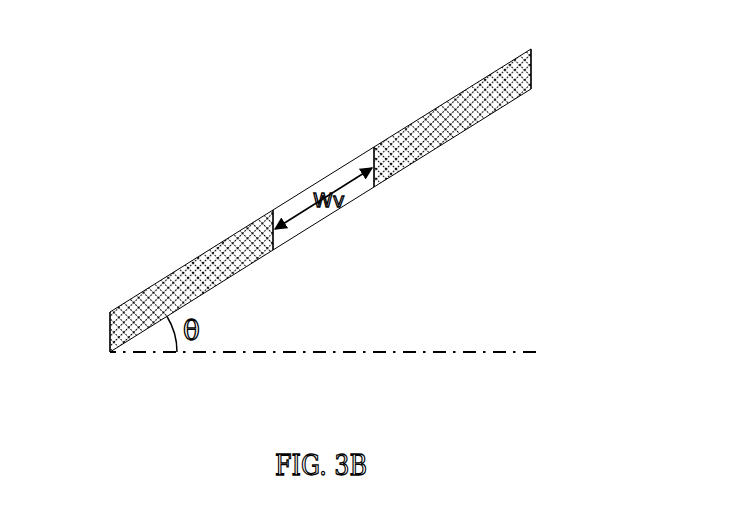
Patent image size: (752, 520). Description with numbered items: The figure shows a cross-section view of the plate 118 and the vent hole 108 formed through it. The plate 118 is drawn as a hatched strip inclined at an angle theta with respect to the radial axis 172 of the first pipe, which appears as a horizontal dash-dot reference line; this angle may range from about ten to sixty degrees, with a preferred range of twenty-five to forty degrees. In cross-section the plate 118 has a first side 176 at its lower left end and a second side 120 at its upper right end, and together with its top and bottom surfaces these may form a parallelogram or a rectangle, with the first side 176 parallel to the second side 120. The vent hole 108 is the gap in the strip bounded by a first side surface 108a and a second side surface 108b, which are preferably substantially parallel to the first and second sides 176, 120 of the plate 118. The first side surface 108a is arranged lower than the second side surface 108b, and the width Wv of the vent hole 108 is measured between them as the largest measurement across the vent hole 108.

The vent hole 108 is at (345, 172).
The first side surface 108a is at (275, 246).
The second side surface 108b is at (372, 183).
The plate 118 is at (462, 104).
The second side 120 is at (531, 68).
The radial axis 172 is at (520, 352).
The first side 176 is at (110, 338).